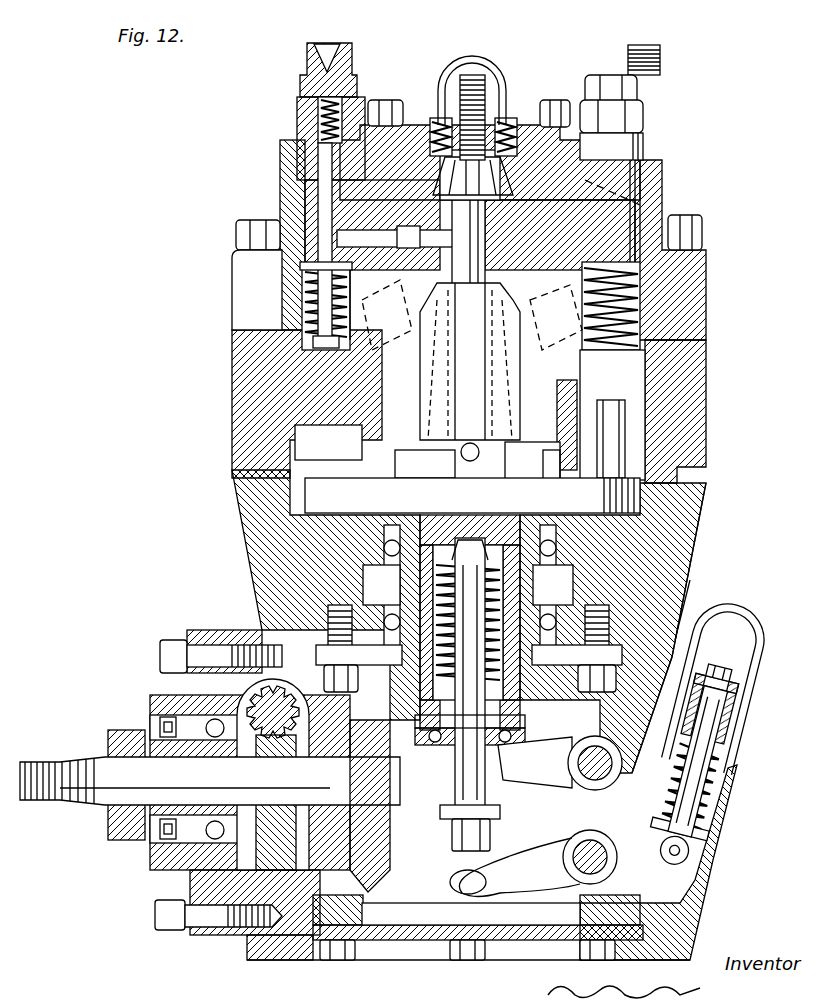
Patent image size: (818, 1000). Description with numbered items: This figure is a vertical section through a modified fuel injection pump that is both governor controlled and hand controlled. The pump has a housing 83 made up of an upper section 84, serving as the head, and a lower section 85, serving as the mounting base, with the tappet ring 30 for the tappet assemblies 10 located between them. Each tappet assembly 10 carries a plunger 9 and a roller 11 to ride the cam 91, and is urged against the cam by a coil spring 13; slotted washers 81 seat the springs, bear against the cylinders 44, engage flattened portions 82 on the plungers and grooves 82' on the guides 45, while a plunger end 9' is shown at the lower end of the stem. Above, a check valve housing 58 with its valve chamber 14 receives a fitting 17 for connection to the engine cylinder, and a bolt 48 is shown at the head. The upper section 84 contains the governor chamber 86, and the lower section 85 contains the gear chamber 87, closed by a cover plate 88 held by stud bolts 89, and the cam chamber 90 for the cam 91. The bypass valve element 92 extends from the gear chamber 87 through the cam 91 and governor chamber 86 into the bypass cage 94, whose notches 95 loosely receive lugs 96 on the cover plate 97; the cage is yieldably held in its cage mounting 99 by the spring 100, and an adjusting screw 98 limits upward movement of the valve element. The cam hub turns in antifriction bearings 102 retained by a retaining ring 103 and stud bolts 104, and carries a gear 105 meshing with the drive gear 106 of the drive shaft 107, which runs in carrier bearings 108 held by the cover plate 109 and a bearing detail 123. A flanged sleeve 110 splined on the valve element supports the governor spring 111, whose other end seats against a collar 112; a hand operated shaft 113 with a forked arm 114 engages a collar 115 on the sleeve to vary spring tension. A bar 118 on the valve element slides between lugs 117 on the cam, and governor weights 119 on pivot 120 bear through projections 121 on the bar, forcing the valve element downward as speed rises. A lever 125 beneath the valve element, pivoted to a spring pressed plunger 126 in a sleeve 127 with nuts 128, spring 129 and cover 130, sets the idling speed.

The plunger 9 is at (291, 241).
The valve disc 9' is at (354, 349).
The cam tappet assembly 10 is at (300, 384).
The roller 11 is at (320, 410).
The coil spring 13 is at (352, 292).
The check valve chamber 14 is at (318, 130).
The fitting 17 is at (348, 54).
The tappet ring 30 is at (706, 393).
The cylinders 44 is at (300, 196).
The guides 45 is at (300, 308).
The bolt 48 is at (647, 150).
The housing 58 is at (318, 112).
The slotted washers 81 is at (300, 266).
The flattened portions 82 is at (291, 309).
The grooves 82' is at (271, 270).
The housing 83 is at (680, 575).
The upper section 84 is at (690, 300).
The lower section 85 is at (665, 540).
The governor chamber 86 is at (592, 306).
The gear chamber 87 is at (429, 828).
The cover plate 88 is at (418, 942).
The stud bolts 89 is at (470, 952).
The cam chamber 90 is at (640, 472).
The cam 91 is at (472, 495).
The bypass valve element 92 is at (458, 238).
The bypass cage 94 is at (478, 192).
The notches 95 is at (528, 170).
The lugs 96 is at (545, 160).
The cover plate 97 is at (407, 98).
The adjusting screw 98 is at (488, 74).
The cage mounting 99 is at (383, 100).
The spring 100 is at (432, 96).
The antifriction bearings 102 is at (468, 585).
The retaining ring 103 is at (630, 652).
The stud bolts 104 is at (635, 612).
The gear 105 is at (570, 690).
The drive gear 106 is at (384, 802).
The drive shaft 107 is at (210, 745).
The carrier bearings 108 is at (308, 854).
The cover plate 109 is at (190, 884).
The flanged sleeve 110 is at (522, 724).
The governor spring 111 is at (470, 590).
The collar 112 is at (498, 540).
The hand operated shaft 113 is at (594, 758).
The forked arm 114 is at (525, 776).
The collar 115 is at (515, 740).
The lugs 117 is at (552, 470).
The bar 118 is at (437, 462).
The governor weights 119 is at (468, 361).
The pivot 120 is at (470, 462).
The projections 121 is at (528, 404).
The gear 123 is at (250, 702).
The lever 125 is at (612, 838).
The plunger 126 is at (696, 752).
The sleeve 127 is at (702, 735).
The nuts 128 is at (722, 670).
The spring 129 is at (700, 808).
The cover 130 is at (741, 614).